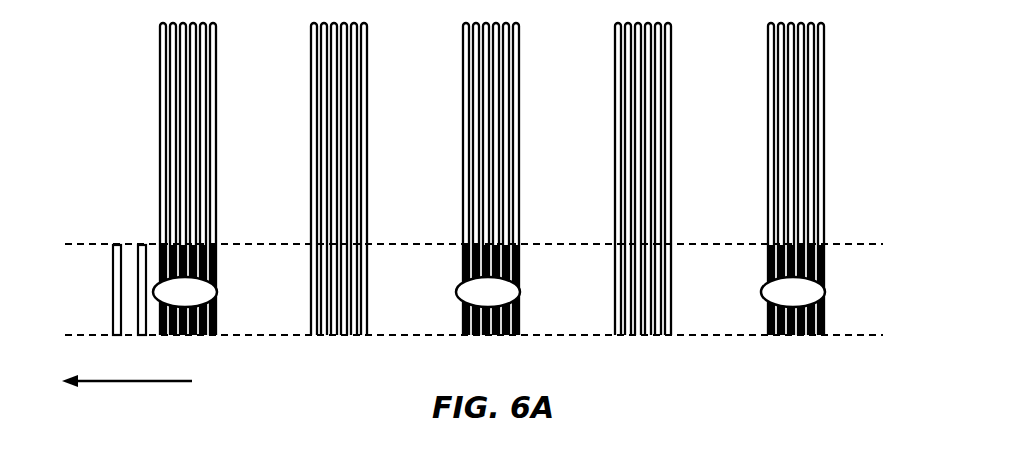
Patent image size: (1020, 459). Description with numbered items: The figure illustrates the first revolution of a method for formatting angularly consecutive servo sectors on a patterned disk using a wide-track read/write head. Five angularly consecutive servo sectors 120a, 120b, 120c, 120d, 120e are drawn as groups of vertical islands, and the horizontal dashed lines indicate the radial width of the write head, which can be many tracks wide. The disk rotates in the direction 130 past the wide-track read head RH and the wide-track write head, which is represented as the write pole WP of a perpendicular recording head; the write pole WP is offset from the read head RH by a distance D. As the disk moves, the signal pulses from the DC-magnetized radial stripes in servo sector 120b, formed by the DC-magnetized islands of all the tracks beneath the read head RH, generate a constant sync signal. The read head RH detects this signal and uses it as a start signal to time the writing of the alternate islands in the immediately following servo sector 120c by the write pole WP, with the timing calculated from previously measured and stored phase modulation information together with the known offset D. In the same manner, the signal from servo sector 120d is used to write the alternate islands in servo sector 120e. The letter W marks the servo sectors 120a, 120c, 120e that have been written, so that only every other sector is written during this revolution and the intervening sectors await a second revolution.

The servo sector 120a is at (223, 179).
The servo sector 120b is at (369, 331).
The servo sector 120c is at (521, 331).
The servo sector 120d is at (673, 331).
The servo sector 120e is at (826, 331).
The direction of disk rotation 130 is at (131, 382).
The written-sector indicator W is at (229, 318).
The write pole WP is at (118, 308).
The read head RH is at (143, 244).
The offset distance D is at (170, 354).